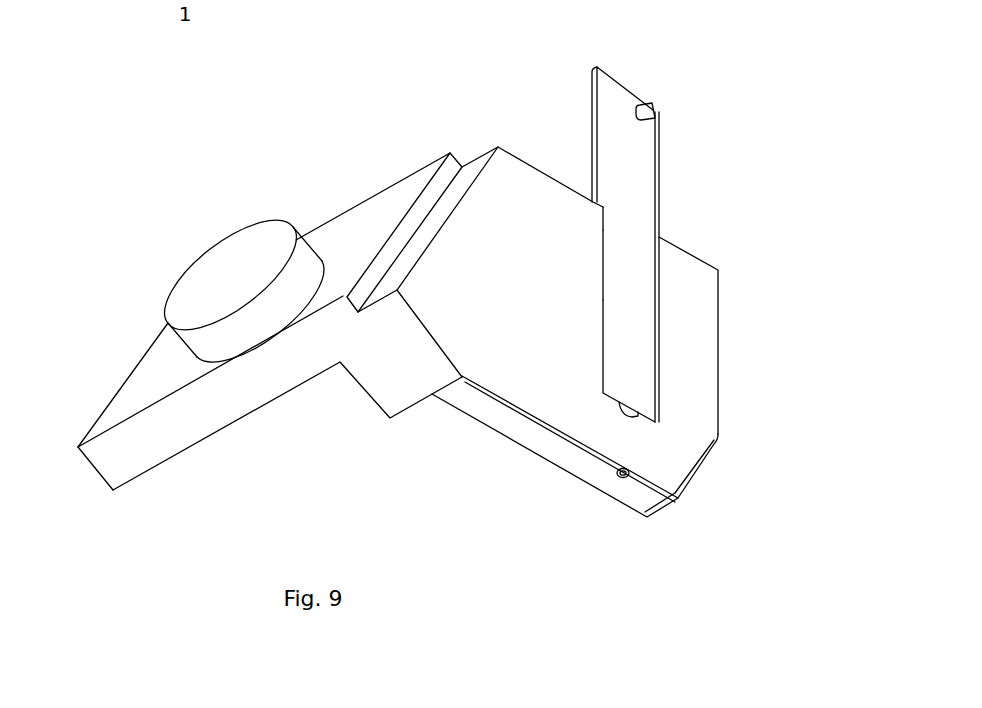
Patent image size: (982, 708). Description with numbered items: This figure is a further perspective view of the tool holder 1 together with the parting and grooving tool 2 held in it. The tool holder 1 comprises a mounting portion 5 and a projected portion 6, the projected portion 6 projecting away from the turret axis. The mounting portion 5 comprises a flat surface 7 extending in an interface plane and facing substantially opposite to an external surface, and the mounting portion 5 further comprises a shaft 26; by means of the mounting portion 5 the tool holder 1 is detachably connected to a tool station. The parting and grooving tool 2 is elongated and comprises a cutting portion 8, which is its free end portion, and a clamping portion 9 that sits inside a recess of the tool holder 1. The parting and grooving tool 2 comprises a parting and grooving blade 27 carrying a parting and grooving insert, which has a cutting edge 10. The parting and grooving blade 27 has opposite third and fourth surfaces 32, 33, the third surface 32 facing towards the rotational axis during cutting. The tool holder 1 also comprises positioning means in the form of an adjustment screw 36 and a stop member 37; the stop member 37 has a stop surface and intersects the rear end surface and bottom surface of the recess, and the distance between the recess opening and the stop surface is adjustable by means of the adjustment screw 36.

The tool holder 1 is at (517, 377).
The parting and grooving tool 2 is at (608, 168).
The mounting portion 5 is at (253, 378).
The projected portion 6 is at (703, 395).
The flat surface 7 is at (363, 220).
The cutting portion 8 is at (622, 92).
The clamping portion 9 is at (637, 318).
The cutting edge 10 is at (657, 108).
The shaft 26 is at (245, 267).
The parting and grooving blade 27 is at (628, 153).
The third surface 32 is at (657, 182).
The fourth surface 33 is at (590, 103).
The adjustment screw 36 is at (620, 477).
The stop member 37 is at (628, 410).